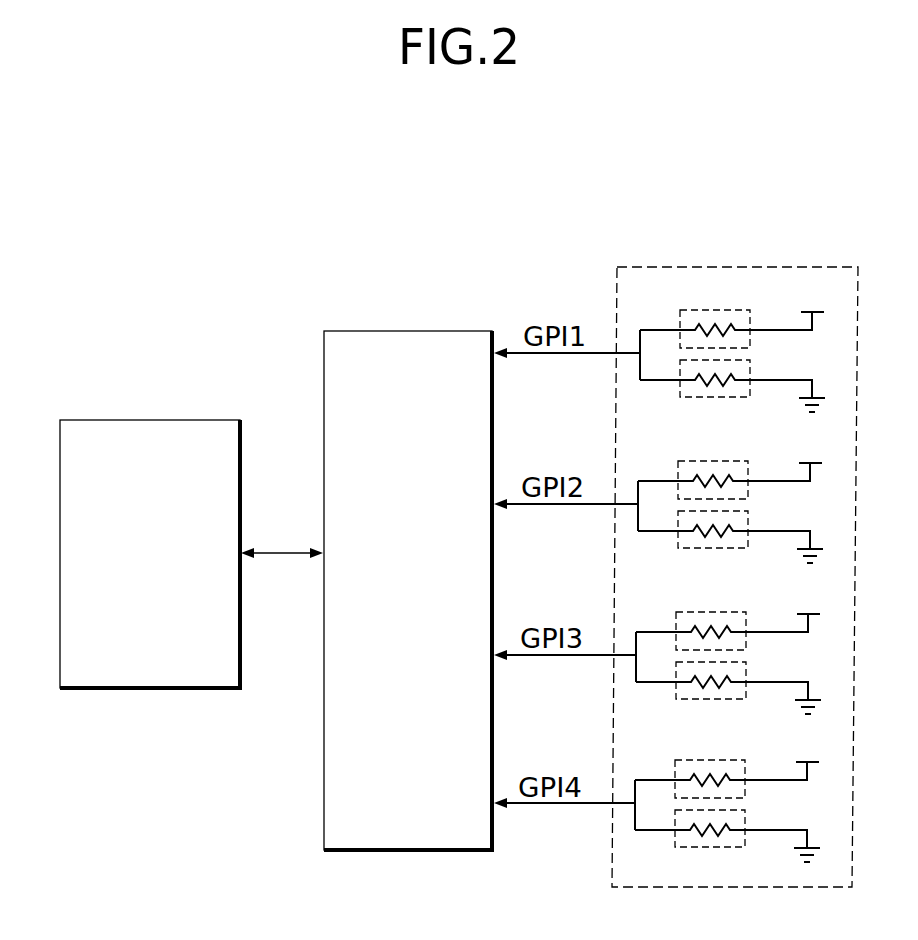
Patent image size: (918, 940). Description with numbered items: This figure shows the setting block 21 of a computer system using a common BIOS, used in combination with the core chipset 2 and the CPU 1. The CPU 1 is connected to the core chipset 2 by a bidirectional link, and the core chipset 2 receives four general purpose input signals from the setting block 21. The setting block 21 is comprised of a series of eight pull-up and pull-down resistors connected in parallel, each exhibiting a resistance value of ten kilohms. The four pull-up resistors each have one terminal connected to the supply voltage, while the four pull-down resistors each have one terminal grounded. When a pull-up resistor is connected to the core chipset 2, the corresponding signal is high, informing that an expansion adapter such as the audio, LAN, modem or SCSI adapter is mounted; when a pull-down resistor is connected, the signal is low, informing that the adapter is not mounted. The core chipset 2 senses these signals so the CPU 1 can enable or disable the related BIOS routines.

The CPU 1 is at (150, 420).
The core chipset 2 is at (404, 330).
The setting block 21 is at (744, 263).